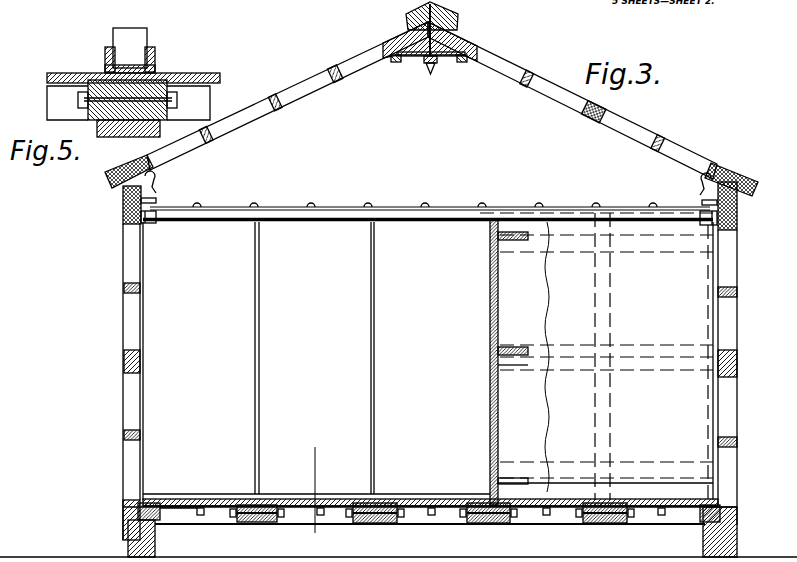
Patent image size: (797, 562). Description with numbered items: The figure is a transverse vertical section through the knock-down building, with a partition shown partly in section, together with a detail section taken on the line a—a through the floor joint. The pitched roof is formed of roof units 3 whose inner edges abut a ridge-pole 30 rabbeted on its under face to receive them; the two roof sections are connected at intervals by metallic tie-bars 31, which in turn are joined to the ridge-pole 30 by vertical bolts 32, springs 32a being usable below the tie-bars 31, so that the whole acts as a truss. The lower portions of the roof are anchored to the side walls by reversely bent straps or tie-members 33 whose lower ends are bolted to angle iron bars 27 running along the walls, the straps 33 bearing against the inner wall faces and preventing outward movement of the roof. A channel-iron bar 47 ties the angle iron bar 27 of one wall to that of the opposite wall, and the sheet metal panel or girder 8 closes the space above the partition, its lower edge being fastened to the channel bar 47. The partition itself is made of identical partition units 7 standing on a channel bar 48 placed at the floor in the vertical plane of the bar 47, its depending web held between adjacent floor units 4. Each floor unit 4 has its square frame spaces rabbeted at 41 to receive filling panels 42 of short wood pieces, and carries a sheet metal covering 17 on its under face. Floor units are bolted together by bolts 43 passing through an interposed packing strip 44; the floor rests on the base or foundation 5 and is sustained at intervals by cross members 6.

In FIG. 3, the roof unit 3 is at (305, 82).
In FIG. 3, the ridge-pole 30 is at (456, 17).
In FIG. 3, the tie-bar 31 is at (416, 57).
In FIG. 3, the vertical bolt 32 is at (431, 74).
In FIG. 3, the spring 32a is at (438, 63).
In FIG. 3, the sheet metal panel or girder 8 is at (377, 143).
In FIG. 3, the strap or tie-member 33 is at (156, 181).
In FIG. 3, the metallic sheet 17 is at (123, 332).
In FIG. 3, the channel-iron bar 47 is at (404, 214).
In FIG. 3, the angle iron bar 27 is at (149, 224).
In FIG. 3, the partition unit 7 is at (428, 359).
In FIG. 5, the partition unit 7 is at (137, 38).
In FIG. 3, the floor unit 4 is at (178, 508).
In FIG. 5, the floor unit 4 is at (200, 97).
In FIG. 3, the filling panel 42 is at (213, 500).
In FIG. 3, the rabbet 41 is at (152, 503).
In FIG. 5, the rabbet 41 is at (100, 80).
In FIG. 3, the channel bar 48 is at (263, 498).
In FIG. 5, the channel bar 48 is at (155, 67).
In FIG. 3, the bolt 43 is at (263, 522).
In FIG. 5, the bolt 43 is at (107, 137).
In FIG. 3, the packing strip 44 is at (372, 521).
In FIG. 3, the cross member 6 is at (430, 515).
In FIG. 5, the cross member 6 is at (133, 130).
In FIG. 3, the base or foundation 5 is at (155, 538).
In FIG. 3, the section line a— a is at (314, 490).